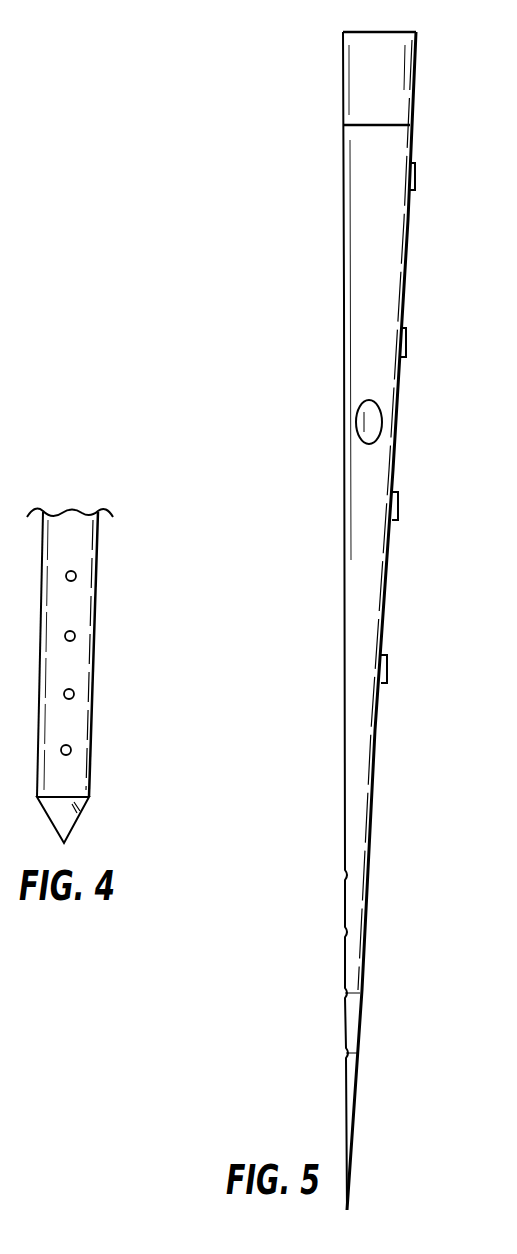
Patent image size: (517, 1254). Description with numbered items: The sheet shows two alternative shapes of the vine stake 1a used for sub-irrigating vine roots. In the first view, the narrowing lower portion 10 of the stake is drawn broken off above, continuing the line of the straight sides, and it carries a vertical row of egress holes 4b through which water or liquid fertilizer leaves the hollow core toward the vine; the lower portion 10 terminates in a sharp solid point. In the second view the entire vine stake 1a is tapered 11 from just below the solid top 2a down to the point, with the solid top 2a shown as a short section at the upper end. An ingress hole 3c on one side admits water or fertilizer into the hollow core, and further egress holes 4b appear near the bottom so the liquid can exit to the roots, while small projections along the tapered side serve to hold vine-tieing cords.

In FIG. 5, the vine stake 1a is at (418, 253).
In FIG. 5, the solid top 2a is at (417, 92).
In FIG. 5, the ingress hole 3c is at (383, 428).
In FIG. 4, the egress holes 4b is at (74, 694).
In FIG. 5, the egress holes 4b is at (356, 993).
In FIG. 4, the narrowing lower portion 10 is at (98, 565).
In FIG. 5, the tapered 11 is at (343, 363).